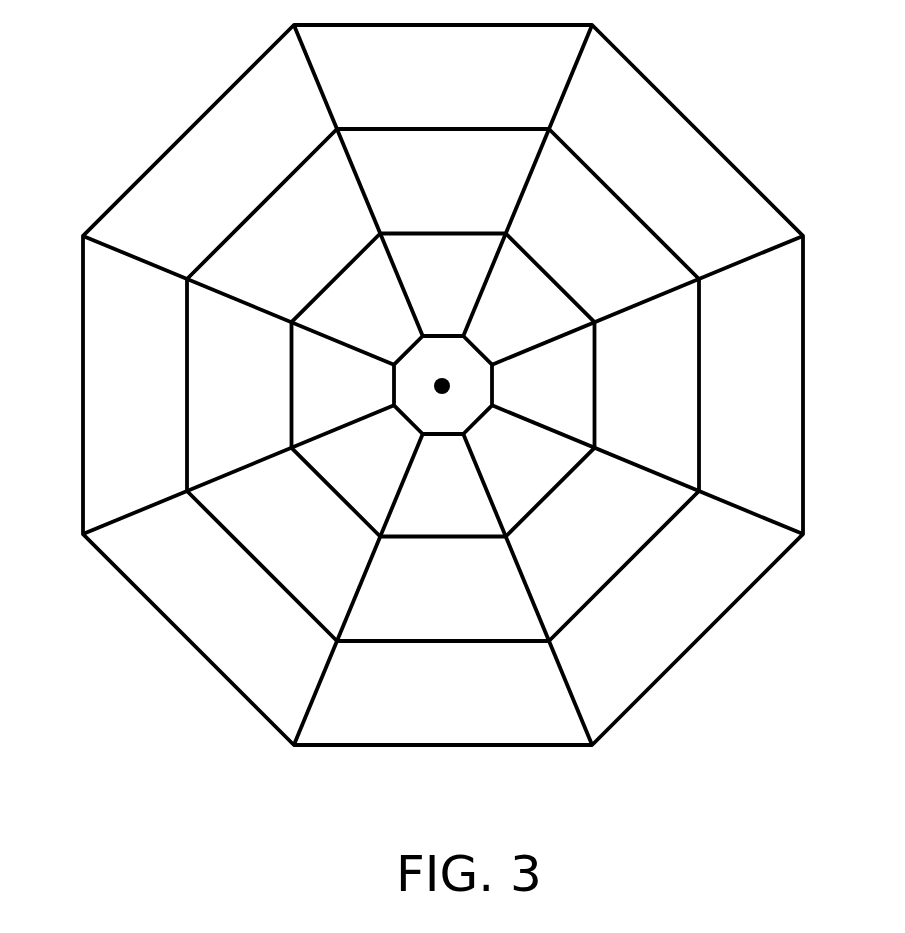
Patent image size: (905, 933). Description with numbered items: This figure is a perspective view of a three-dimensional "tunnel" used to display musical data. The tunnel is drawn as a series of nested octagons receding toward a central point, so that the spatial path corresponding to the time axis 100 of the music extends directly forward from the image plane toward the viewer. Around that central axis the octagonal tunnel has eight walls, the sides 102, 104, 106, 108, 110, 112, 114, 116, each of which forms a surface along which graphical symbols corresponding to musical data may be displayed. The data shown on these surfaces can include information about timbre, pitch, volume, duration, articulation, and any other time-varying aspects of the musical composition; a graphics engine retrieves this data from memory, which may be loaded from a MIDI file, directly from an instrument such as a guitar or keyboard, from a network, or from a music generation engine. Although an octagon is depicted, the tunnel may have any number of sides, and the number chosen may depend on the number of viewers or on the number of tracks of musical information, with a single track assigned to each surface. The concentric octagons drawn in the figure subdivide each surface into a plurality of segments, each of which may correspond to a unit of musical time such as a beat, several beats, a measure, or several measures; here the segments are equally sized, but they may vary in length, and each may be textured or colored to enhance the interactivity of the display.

The time axis 100 is at (444, 380).
The side 102 is at (442, 508).
The side 104 is at (529, 474).
The side 106 is at (737, 385).
The side 108 is at (650, 180).
The side 110 is at (443, 92).
The side 112 is at (235, 177).
The side 114 is at (148, 385).
The side 116 is at (235, 593).